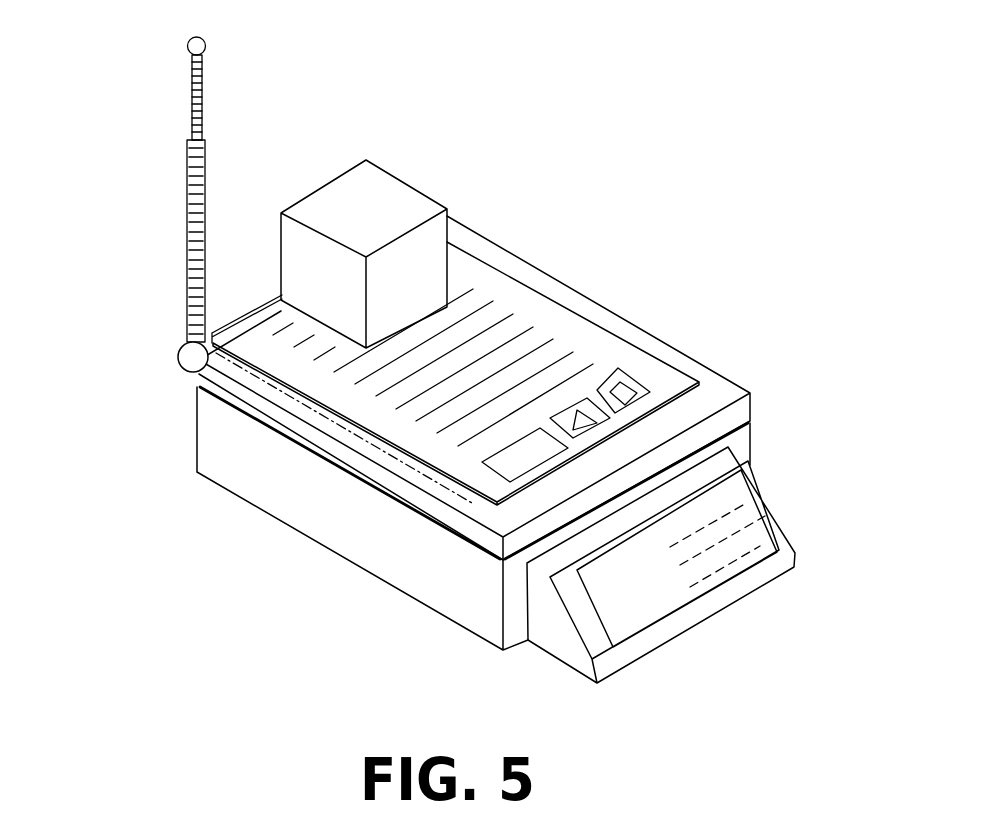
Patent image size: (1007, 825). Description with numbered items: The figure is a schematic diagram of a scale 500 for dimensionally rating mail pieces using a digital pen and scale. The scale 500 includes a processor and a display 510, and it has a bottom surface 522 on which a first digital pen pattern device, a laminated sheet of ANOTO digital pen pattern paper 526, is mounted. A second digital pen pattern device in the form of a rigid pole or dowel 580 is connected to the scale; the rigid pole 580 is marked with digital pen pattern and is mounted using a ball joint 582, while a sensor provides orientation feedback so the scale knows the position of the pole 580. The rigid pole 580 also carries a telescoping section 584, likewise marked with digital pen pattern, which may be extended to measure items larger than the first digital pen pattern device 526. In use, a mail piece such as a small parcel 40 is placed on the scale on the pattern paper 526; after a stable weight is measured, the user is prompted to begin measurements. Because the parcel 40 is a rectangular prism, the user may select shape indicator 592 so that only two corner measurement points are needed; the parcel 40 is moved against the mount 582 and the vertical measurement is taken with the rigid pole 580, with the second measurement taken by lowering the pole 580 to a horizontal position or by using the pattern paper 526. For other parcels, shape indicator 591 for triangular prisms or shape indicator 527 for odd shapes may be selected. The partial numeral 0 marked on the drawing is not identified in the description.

The scale 500 is at (223, 573).
The bottom surface 522 is at (718, 400).
The digital pen pattern paper 526 is at (623, 352).
The shape indicator 591 is at (570, 418).
The shape indicator 592 is at (633, 387).
The shape indicator 527 is at (472, 503).
The small parcel 40 is at (390, 177).
The display 510 is at (743, 545).
The rigid pole 580 is at (186, 253).
The telescoping section 584 is at (191, 88).
The ball joint 582 is at (178, 355).
The partial reference numeral 0 is at (181, 363).